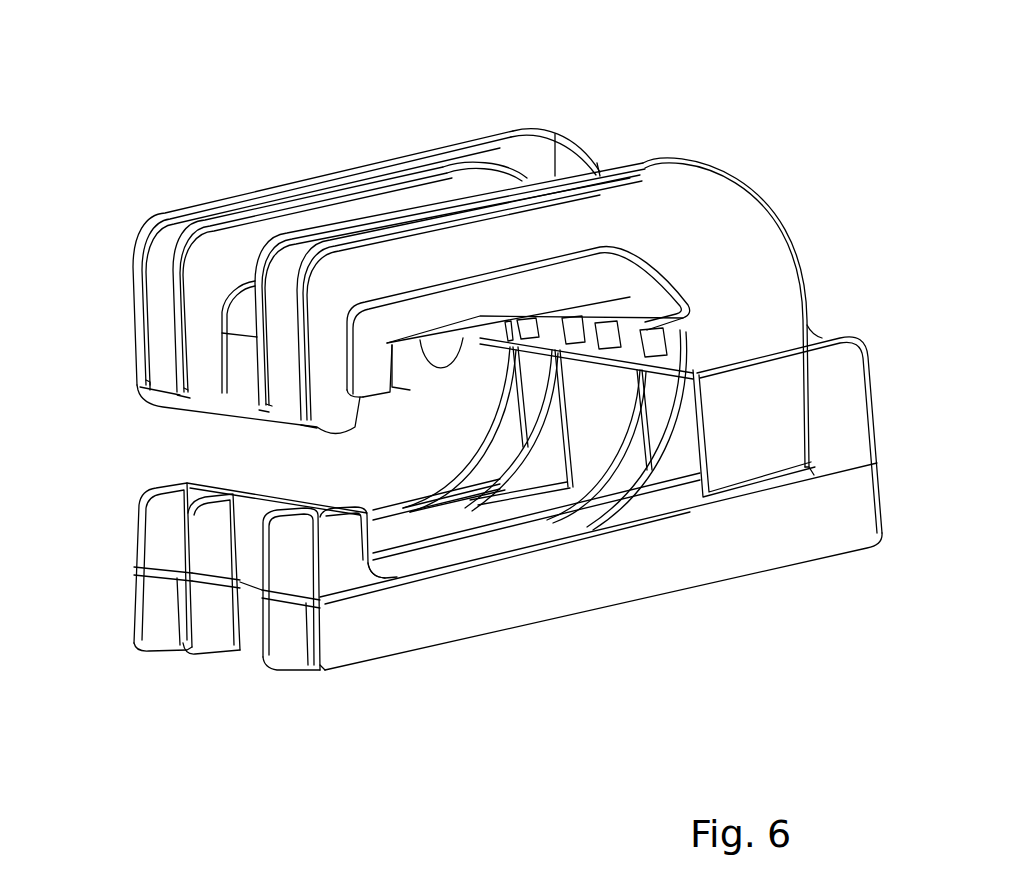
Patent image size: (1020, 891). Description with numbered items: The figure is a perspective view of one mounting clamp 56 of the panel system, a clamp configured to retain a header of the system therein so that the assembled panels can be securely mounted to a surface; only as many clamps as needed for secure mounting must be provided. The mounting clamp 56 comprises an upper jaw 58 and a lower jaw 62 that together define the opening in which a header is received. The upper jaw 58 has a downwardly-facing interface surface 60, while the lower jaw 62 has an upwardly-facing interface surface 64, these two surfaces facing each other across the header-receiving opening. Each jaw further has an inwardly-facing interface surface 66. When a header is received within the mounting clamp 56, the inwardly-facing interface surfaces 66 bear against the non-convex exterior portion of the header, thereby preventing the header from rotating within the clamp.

The mounting clamp 56 is at (733, 143).
The upper jaw 58 is at (437, 262).
The downwardly-facing interface surface 60 is at (413, 357).
The lower jaw 62 is at (503, 593).
The upwardly-facing interface surface 64 is at (530, 535).
The inwardly-facing interface surface 66 is at (375, 532).